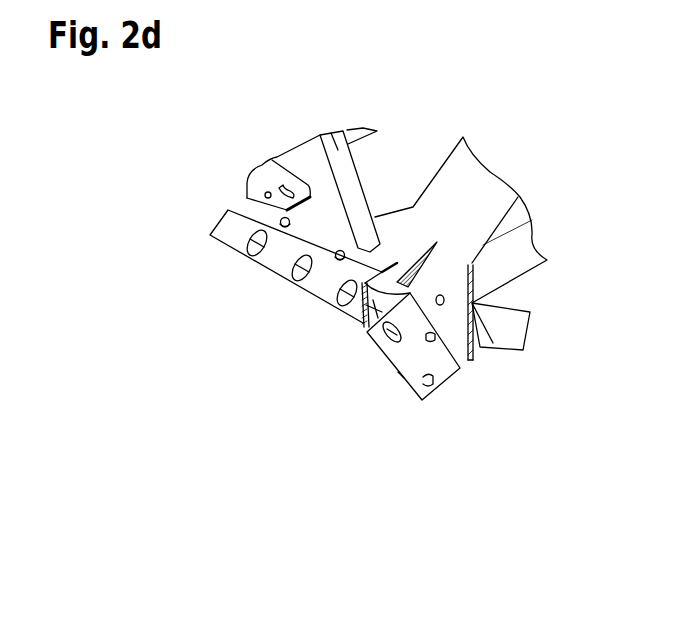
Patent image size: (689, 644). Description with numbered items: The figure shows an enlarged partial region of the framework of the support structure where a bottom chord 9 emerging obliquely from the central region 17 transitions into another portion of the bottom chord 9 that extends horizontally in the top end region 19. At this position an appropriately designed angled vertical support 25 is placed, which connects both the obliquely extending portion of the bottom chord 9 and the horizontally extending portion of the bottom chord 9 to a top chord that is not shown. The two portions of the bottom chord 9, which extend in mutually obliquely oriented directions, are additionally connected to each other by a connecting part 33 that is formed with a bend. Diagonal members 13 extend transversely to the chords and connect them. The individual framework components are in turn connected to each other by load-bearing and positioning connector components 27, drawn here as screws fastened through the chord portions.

The bottom chord 9 is at (287, 272).
The diagonal member 13 is at (330, 130).
The central region 17 is at (488, 380).
The top end region 19 is at (246, 150).
The angled vertical support 25 is at (470, 188).
The connector component 27 is at (280, 224).
The connecting part 33 is at (360, 305).